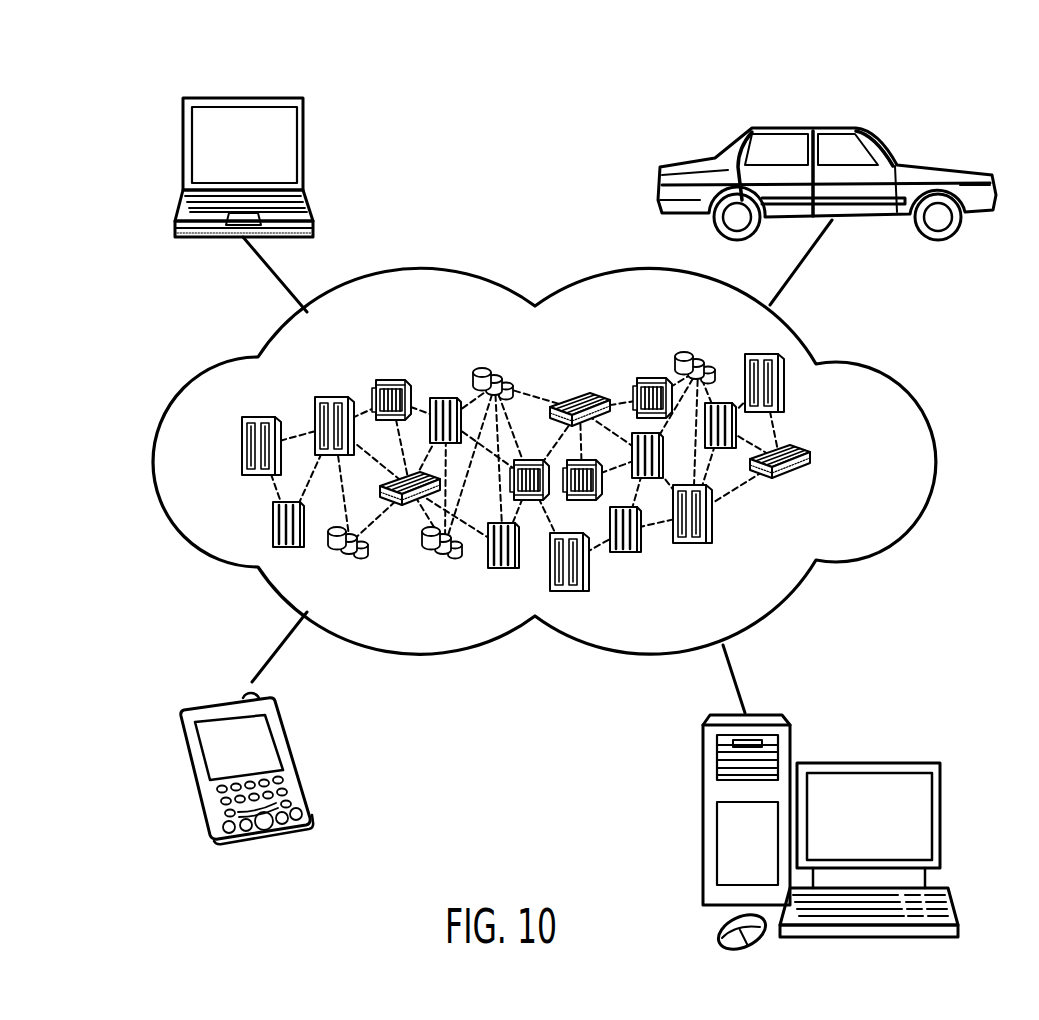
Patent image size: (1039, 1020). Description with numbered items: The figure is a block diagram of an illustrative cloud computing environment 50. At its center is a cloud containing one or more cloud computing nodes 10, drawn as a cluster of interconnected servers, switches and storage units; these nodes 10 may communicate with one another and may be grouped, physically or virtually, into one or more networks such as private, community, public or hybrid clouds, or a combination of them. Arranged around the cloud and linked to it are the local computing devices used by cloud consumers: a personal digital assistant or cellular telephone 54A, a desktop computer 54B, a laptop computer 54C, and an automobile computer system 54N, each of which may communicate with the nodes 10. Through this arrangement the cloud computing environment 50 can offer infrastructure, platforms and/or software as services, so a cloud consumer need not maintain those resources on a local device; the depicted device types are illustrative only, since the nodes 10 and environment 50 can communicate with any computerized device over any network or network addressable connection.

The cloud computing environment 50 is at (880, 368).
The cloud computing node 10 is at (822, 461).
The personal digital assistant or cellular telephone 54A is at (223, 702).
The desktop computer 54B is at (868, 760).
The laptop computer 54C is at (242, 98).
The automobile computer system 54N is at (803, 128).